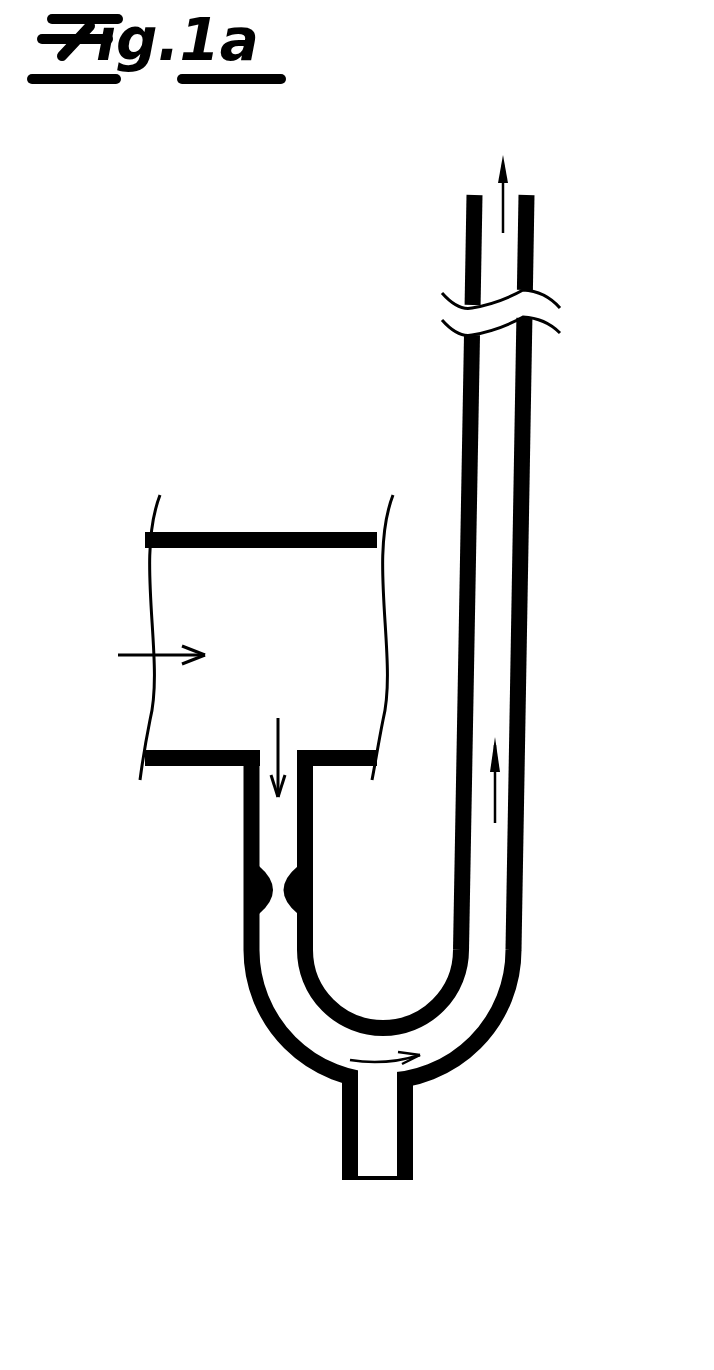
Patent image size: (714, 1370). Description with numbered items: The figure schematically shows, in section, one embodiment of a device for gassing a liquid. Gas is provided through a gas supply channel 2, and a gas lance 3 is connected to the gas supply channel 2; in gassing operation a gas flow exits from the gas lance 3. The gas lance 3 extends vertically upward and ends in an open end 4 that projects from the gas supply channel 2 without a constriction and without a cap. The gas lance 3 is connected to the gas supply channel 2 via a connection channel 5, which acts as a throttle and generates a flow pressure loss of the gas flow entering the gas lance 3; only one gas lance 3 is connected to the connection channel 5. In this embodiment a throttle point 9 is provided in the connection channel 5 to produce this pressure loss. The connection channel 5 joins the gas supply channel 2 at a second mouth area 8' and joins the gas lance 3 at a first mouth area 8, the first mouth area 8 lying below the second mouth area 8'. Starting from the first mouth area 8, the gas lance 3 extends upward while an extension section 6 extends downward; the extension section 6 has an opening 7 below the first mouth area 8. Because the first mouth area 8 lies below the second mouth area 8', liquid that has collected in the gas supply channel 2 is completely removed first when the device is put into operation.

The gas supply channel 2 is at (292, 647).
The gas lance 3 is at (532, 497).
The open end 4 is at (527, 192).
The connection channel 5 is at (248, 1003).
The extension section 6 is at (411, 1139).
The opening 7 is at (368, 1180).
The first mouth area 8 is at (383, 982).
The second mouth area 8' is at (299, 799).
The throttle point 9 is at (243, 872).